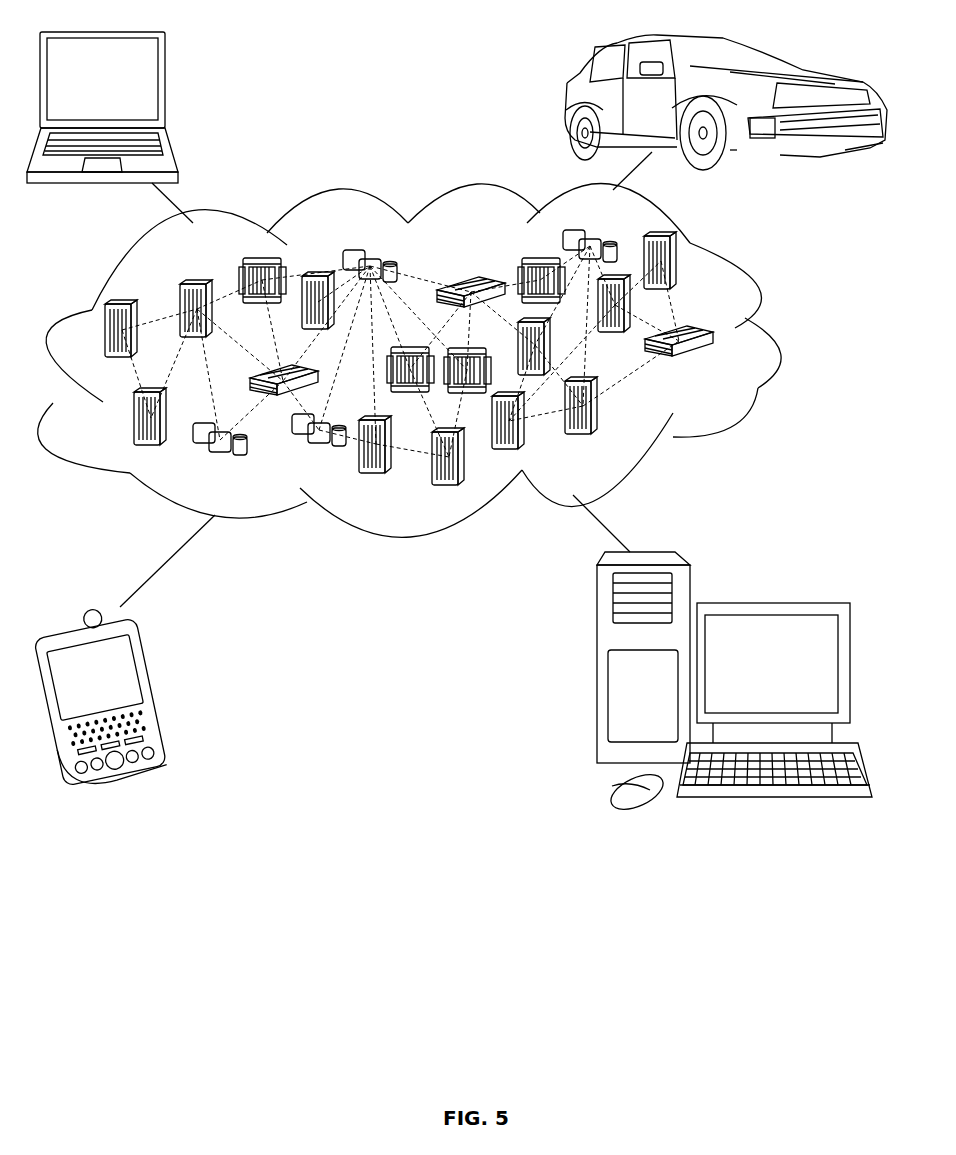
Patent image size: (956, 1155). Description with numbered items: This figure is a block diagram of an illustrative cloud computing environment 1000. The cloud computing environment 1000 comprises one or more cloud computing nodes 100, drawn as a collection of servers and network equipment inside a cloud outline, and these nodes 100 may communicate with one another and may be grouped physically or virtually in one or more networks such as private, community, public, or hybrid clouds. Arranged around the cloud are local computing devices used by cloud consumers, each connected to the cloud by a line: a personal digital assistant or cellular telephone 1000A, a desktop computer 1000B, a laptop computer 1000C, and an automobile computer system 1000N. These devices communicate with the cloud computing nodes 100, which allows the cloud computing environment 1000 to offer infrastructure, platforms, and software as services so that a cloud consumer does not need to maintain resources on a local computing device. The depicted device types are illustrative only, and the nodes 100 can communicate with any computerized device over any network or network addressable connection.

The cloud computing environment 1000 is at (773, 340).
The cloud computing nodes 100 is at (722, 369).
The personal digital assistant (PDA) or cellular telephone 1000A is at (157, 690).
The desktop computer 1000B is at (782, 580).
The laptop computer 1000C is at (165, 90).
The automobile computer system 1000N is at (565, 103).